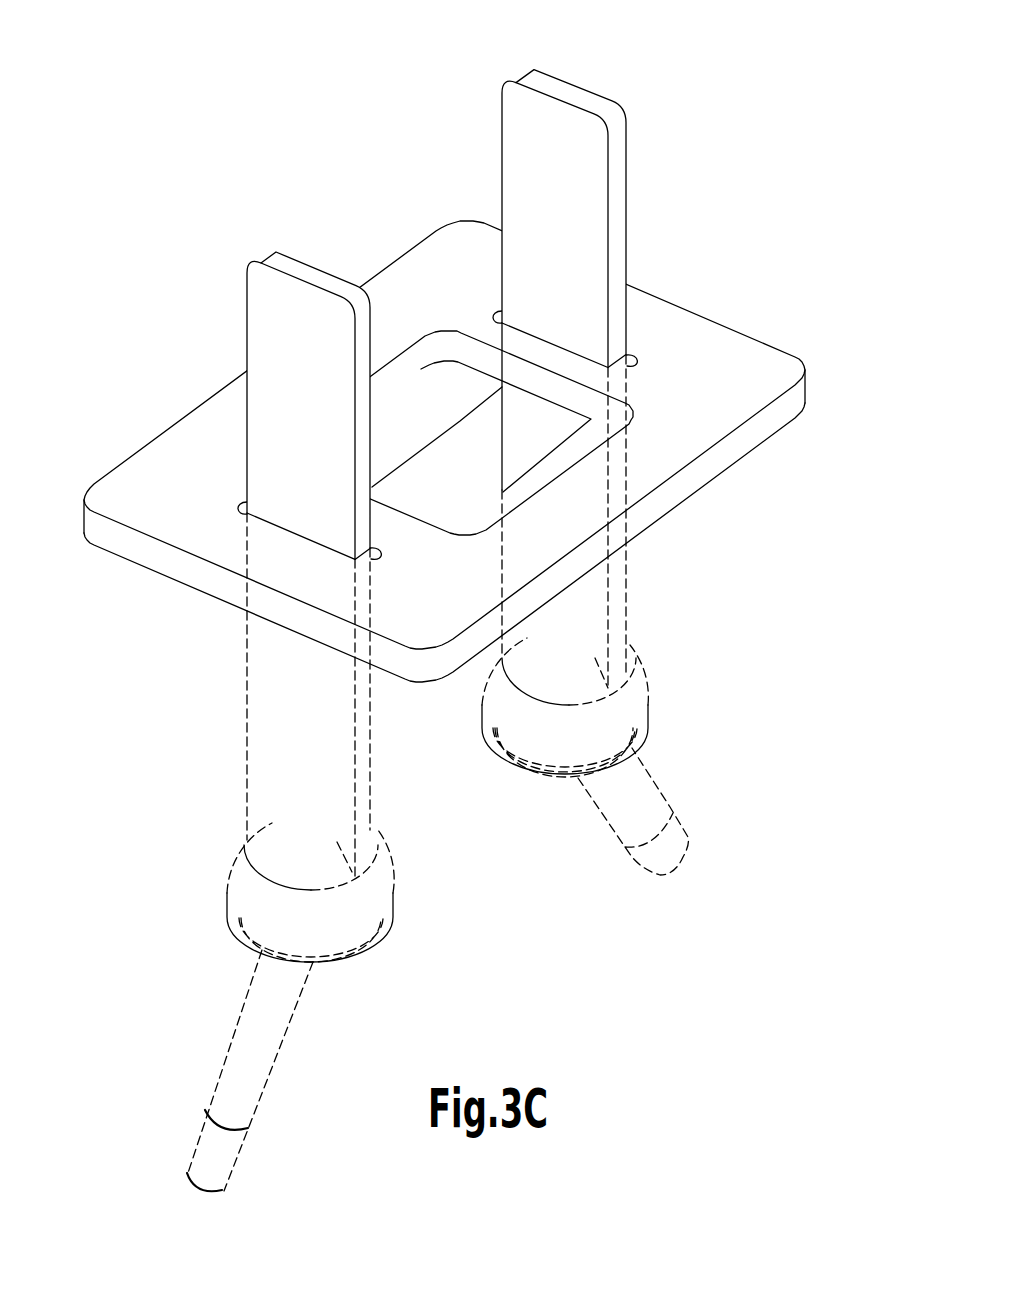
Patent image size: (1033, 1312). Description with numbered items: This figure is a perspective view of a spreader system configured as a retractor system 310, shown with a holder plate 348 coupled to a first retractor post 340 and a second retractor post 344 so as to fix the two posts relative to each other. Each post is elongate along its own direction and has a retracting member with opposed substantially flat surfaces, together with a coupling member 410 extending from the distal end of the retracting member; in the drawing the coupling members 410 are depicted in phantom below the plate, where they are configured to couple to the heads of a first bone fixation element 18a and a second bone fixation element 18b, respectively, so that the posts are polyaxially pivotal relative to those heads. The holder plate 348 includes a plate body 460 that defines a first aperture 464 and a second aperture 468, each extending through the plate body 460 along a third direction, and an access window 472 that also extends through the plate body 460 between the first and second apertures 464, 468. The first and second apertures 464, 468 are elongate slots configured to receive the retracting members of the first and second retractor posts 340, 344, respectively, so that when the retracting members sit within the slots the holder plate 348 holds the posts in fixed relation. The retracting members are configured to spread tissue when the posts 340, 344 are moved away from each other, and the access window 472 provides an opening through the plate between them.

The retractor system 310 is at (437, 598).
The first retractor post 340 is at (272, 355).
The second retractor post 344 is at (529, 133).
The holder plate 348 is at (437, 444).
The plate body 460 is at (733, 378).
The first aperture 464 is at (292, 522).
The second aperture 468 is at (645, 337).
The access window 472 is at (456, 503).
The coupling member 410 is at (607, 713).
The first bone fixation element 18a is at (180, 1046).
The second bone fixation element 18b is at (700, 777).